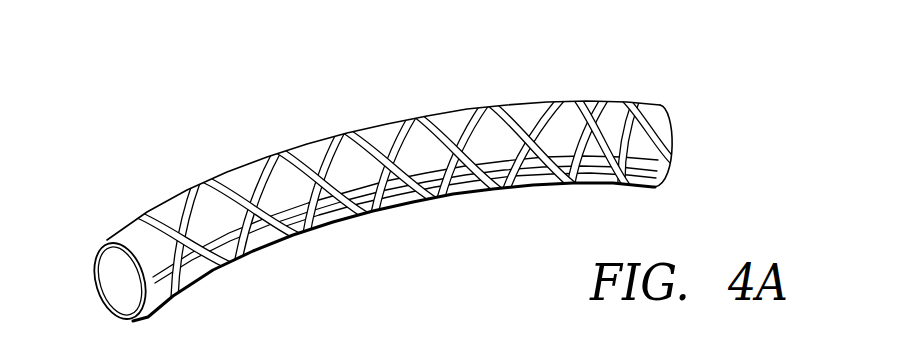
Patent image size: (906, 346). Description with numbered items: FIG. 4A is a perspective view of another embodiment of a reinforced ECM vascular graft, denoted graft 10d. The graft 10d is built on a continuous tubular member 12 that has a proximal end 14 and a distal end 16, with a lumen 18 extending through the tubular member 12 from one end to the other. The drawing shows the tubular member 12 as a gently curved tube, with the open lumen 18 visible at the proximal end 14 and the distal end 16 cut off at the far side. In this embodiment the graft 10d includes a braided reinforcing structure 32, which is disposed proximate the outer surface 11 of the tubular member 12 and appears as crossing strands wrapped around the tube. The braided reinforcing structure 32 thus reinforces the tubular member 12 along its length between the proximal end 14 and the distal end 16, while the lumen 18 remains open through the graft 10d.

The reinforced vascular graft 10d is at (380, 194).
The outer surface 11 is at (367, 213).
The continuous tubular member 12 is at (250, 164).
The proximal end 14 is at (95, 260).
The distal end 16 is at (668, 113).
The lumen 18 is at (122, 290).
The braided reinforcing structure 32 is at (411, 121).